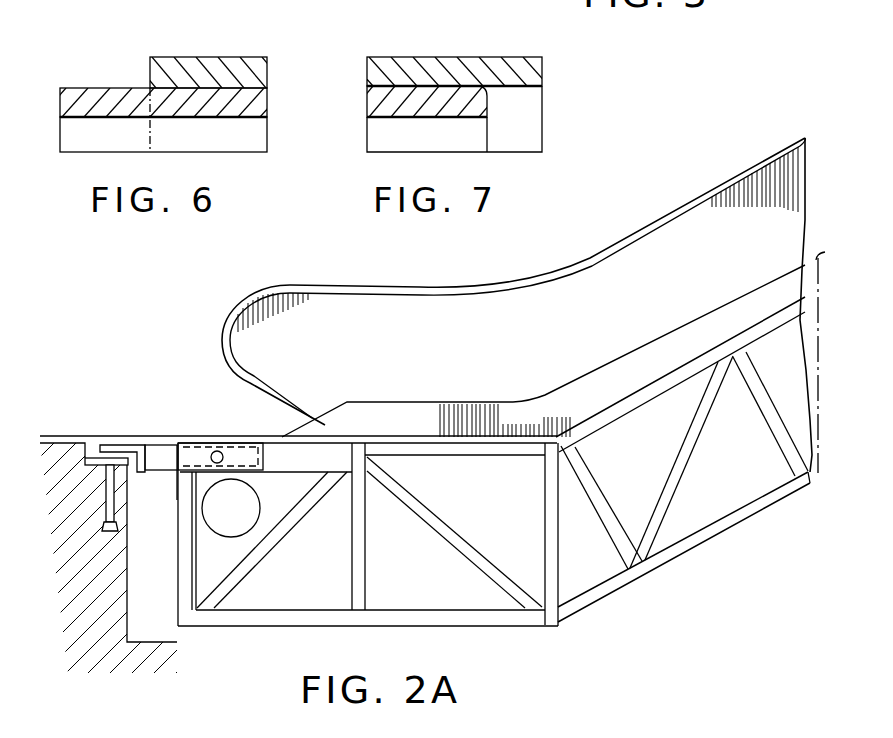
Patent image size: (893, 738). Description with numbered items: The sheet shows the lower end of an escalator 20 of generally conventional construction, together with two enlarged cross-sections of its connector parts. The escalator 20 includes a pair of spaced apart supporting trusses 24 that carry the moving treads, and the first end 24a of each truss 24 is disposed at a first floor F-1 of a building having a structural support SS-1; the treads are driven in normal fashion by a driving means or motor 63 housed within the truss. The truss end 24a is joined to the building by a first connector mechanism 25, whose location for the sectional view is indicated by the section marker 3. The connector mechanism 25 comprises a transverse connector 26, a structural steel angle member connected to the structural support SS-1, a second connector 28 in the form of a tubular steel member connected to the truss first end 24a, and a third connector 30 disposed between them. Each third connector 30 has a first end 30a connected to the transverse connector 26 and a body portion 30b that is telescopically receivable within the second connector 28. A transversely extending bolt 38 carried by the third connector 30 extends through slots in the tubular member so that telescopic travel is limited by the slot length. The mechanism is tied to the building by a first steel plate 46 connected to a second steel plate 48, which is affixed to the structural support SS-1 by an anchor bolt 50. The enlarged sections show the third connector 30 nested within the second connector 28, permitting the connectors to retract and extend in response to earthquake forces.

In FIG. 2A, the escalator 20 is at (737, 162).
In FIG. 2A, the supporting truss 24 is at (684, 554).
In FIG. 2A, the first end of supporting truss 24a is at (177, 577).
In FIG. 2A, the first connector mechanism 25 is at (285, 436).
In FIG. 2A, the transverse connector 26 is at (128, 446).
In FIG. 6, the second connector 28 is at (213, 55).
In FIG. 7, the second connector 28 is at (474, 55).
In FIG. 2A, the second connector 28 is at (327, 449).
In FIG. 6, the third connector 30 is at (85, 97).
In FIG. 7, the third connector 30 is at (393, 97).
In FIG. 2A, the third connector 30 is at (158, 456).
In FIG. 2A, the first end of third connector 30a is at (157, 470).
In FIG. 2A, the body portion of third connector 30b is at (205, 447).
In FIG. 2A, the bolt 38 is at (224, 455).
In FIG. 2A, the first steel plate 46 is at (112, 457).
In FIG. 2A, the second steel plate 48 is at (100, 467).
In FIG. 2A, the anchor bolt 50 is at (112, 530).
In FIG. 2A, the driving means or motor 63 is at (227, 518).
In FIG. 2A, the section line 3 is at (75, 416).
In FIG. 2A, the first floor F-1 is at (74, 447).
In FIG. 2A, the structural support of first floor SS-1 is at (118, 529).